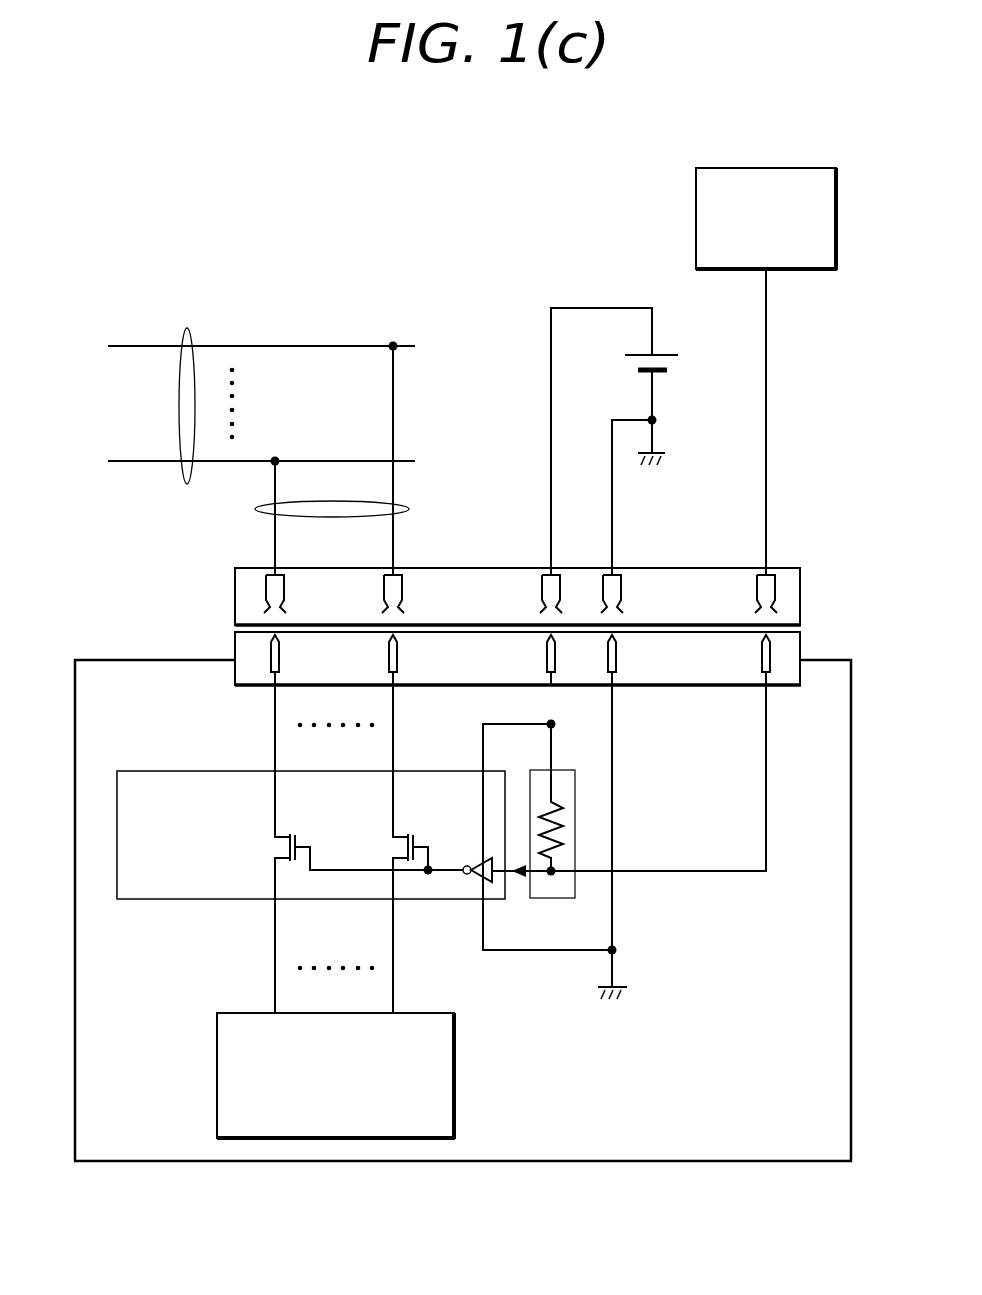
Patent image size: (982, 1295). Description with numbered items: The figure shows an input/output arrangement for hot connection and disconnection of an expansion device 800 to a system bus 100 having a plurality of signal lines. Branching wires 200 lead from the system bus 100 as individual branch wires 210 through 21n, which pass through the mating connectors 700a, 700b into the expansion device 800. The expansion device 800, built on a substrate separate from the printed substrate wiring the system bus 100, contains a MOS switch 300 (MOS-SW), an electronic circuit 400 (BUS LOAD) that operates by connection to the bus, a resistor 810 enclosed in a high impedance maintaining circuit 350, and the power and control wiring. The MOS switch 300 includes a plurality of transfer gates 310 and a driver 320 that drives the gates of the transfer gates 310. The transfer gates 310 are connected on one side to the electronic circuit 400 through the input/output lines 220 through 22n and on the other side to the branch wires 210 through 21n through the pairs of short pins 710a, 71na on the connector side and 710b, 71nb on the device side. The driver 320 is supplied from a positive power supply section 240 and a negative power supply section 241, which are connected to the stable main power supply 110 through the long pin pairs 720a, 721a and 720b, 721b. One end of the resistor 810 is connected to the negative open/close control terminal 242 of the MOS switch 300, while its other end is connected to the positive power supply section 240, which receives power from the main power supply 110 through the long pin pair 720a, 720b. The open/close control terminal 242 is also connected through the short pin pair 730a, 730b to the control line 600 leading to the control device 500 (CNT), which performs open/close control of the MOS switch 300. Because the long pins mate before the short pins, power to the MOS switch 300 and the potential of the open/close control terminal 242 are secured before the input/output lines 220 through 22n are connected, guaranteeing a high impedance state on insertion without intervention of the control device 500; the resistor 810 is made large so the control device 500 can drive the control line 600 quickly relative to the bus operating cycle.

The system bus 100 is at (193, 338).
The branching wires 200 is at (255, 509).
The branch wire 210 is at (277, 483).
The branch wire 21n is at (395, 483).
The main power supply 110 is at (665, 345).
The control device 500 is at (793, 166).
The control line 600 is at (767, 407).
The connector 700a is at (801, 585).
The connector 700b is at (801, 645).
The short pin 710a is at (287, 584).
The short pin 71na is at (407, 584).
The long pin 720a is at (540, 584).
The long pin 721a is at (625, 584).
The short pin 730a is at (780, 584).
The short pin 710b is at (268, 663).
The short pin 71nb is at (398, 680).
The long pin 720b is at (546, 670).
The long pin 721b is at (617, 670).
The short pin 730b is at (771, 670).
The expansion device 800 is at (128, 658).
The MOS switch 300 is at (158, 768).
The transfer gate 310 is at (287, 832).
The driver 320 is at (474, 880).
The input/output line 220 is at (273, 752).
The input/output line 22n is at (391, 752).
The positive power supply section 240 is at (481, 752).
The negative power supply section 241 is at (555, 953).
The open/close control terminal 242 is at (519, 877).
The resistor 810 is at (560, 814).
The high impedance maintaining circuit 350 is at (565, 900).
The electronic circuit 400 is at (457, 1028).